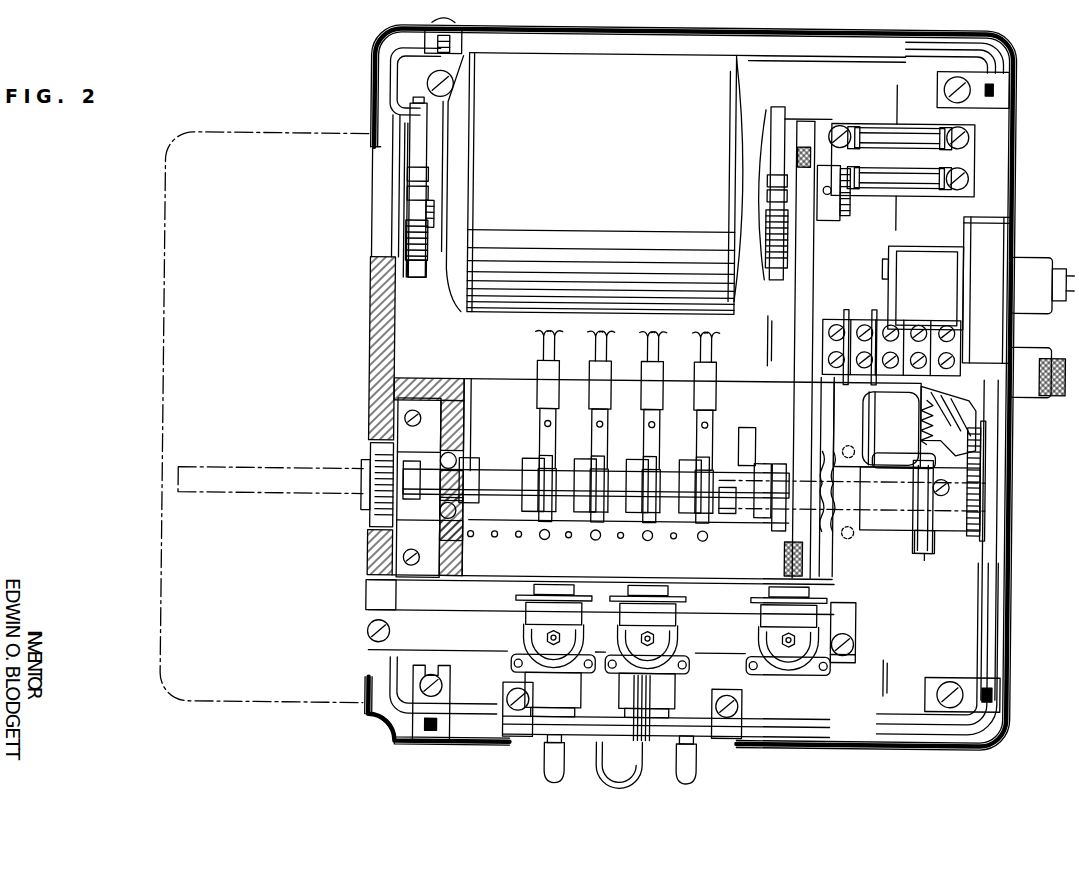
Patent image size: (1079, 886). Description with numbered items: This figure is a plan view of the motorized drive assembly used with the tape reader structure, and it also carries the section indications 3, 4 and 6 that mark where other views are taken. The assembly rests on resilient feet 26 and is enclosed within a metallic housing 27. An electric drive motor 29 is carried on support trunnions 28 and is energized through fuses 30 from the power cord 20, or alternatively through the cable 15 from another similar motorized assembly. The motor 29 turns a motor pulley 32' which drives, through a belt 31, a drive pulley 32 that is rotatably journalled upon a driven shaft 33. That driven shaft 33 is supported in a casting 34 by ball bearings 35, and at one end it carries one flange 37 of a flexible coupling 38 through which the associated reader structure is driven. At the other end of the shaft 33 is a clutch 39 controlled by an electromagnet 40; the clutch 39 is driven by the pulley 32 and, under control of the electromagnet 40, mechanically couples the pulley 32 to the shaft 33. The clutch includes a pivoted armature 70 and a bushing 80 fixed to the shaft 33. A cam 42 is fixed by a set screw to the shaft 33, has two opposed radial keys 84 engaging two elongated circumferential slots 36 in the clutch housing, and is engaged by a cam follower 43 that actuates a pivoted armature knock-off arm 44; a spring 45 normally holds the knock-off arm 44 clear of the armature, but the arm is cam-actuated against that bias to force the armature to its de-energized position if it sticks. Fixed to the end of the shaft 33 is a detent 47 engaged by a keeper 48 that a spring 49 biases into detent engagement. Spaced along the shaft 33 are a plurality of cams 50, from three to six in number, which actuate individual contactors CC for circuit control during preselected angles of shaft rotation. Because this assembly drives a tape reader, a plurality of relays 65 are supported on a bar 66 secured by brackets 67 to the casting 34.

The section line 3- 3 is at (896, 45).
The section line 4- 4 is at (845, 366).
The section line 6- 6 is at (735, 520).
The cable 15 is at (1042, 358).
The power cord 20 is at (1047, 268).
The resilient feet 26 is at (390, 44).
The metallic housing 27 is at (1003, 565).
The support trunnions 28 is at (418, 275).
The electric drive motor 29 is at (475, 313).
The fuses 30 is at (913, 140).
The belt 31 is at (806, 283).
The drive pulley 32 is at (773, 559).
The motor pulley 32' is at (833, 195).
The driven shaft 33 is at (572, 472).
The casting 34 is at (450, 380).
The ball bearings 35 is at (442, 456).
The elongated circumferential slots 36 is at (915, 487).
The flange 37 is at (430, 525).
The flexible coupling 38 is at (382, 492).
The clutch 39 is at (910, 532).
The electromagnet 40 is at (877, 417).
The cam 42 is at (918, 508).
The cam follower 43 is at (922, 555).
The armature knock-off arm 44 is at (883, 450).
The spring 45 is at (920, 411).
The detent 47 is at (958, 535).
The keeper 48 is at (976, 545).
The spring 49 is at (960, 473).
The cams 50 is at (598, 522).
The relays 65 is at (525, 638).
The bar 66 is at (465, 622).
The brackets 67 is at (373, 596).
The armature 70 is at (880, 458).
The bushing 80 is at (940, 530).
The keys 84 is at (930, 480).
The contactors CC is at (556, 426).